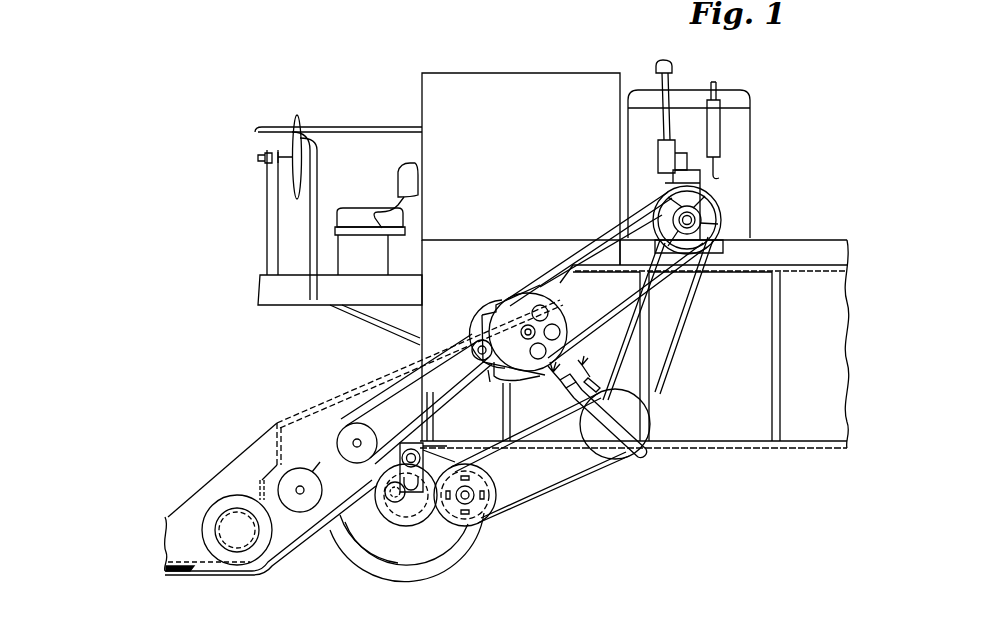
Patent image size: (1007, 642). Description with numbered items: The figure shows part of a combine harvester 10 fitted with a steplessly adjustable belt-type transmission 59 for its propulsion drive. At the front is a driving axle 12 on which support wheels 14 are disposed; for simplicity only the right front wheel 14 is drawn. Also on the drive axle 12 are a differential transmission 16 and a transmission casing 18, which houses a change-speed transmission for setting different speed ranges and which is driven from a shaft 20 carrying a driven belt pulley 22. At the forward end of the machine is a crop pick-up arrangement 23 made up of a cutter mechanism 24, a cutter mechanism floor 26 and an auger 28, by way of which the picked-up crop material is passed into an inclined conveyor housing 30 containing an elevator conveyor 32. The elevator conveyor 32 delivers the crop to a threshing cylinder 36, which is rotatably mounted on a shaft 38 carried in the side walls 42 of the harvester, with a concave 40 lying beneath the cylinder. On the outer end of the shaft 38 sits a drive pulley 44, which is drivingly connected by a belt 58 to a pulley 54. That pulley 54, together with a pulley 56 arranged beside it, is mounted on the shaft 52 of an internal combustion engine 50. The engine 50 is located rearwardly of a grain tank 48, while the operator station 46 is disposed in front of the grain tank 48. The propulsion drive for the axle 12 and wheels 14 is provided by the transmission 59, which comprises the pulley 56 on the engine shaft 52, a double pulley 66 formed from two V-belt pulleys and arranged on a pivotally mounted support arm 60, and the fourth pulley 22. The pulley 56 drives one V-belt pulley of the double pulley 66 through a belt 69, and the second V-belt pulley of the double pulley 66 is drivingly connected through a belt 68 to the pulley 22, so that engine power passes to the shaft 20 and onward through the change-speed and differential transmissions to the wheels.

The combine harvester 10 is at (760, 452).
The front driving axle 12 is at (377, 512).
The support wheels 14 is at (364, 553).
The differential transmission 16 is at (411, 516).
The transmission casing 18 is at (441, 518).
The shaft 20 is at (338, 468).
The driven belt pulley 22 is at (464, 530).
The crop pick-up arrangement 23 is at (250, 430).
The cutter mechanism 24 is at (178, 578).
The cutter mechanism floor 26 is at (212, 576).
The auger 28 is at (248, 555).
The inclined conveyor housing 30 is at (299, 404).
The elevator conveyor 32 is at (381, 405).
The threshing cylinder 36 is at (528, 296).
The shaft 38 is at (525, 332).
The concave 40 is at (498, 376).
The side walls 42 is at (628, 304).
The drive pulley 44 is at (557, 262).
The operator station 46 is at (357, 124).
The grain tank 48 is at (500, 132).
The internal combustion engine 50 is at (745, 125).
The shaft 52 is at (692, 220).
The pulley 54 is at (700, 210).
The pulley 56 is at (703, 235).
The belt 58 is at (607, 233).
The steplessly adjustable belt-type transmission 59 is at (670, 385).
The support arm 60 is at (646, 464).
The double pulley 66 is at (635, 421).
The belt 68 is at (553, 490).
The belt 69 is at (688, 314).